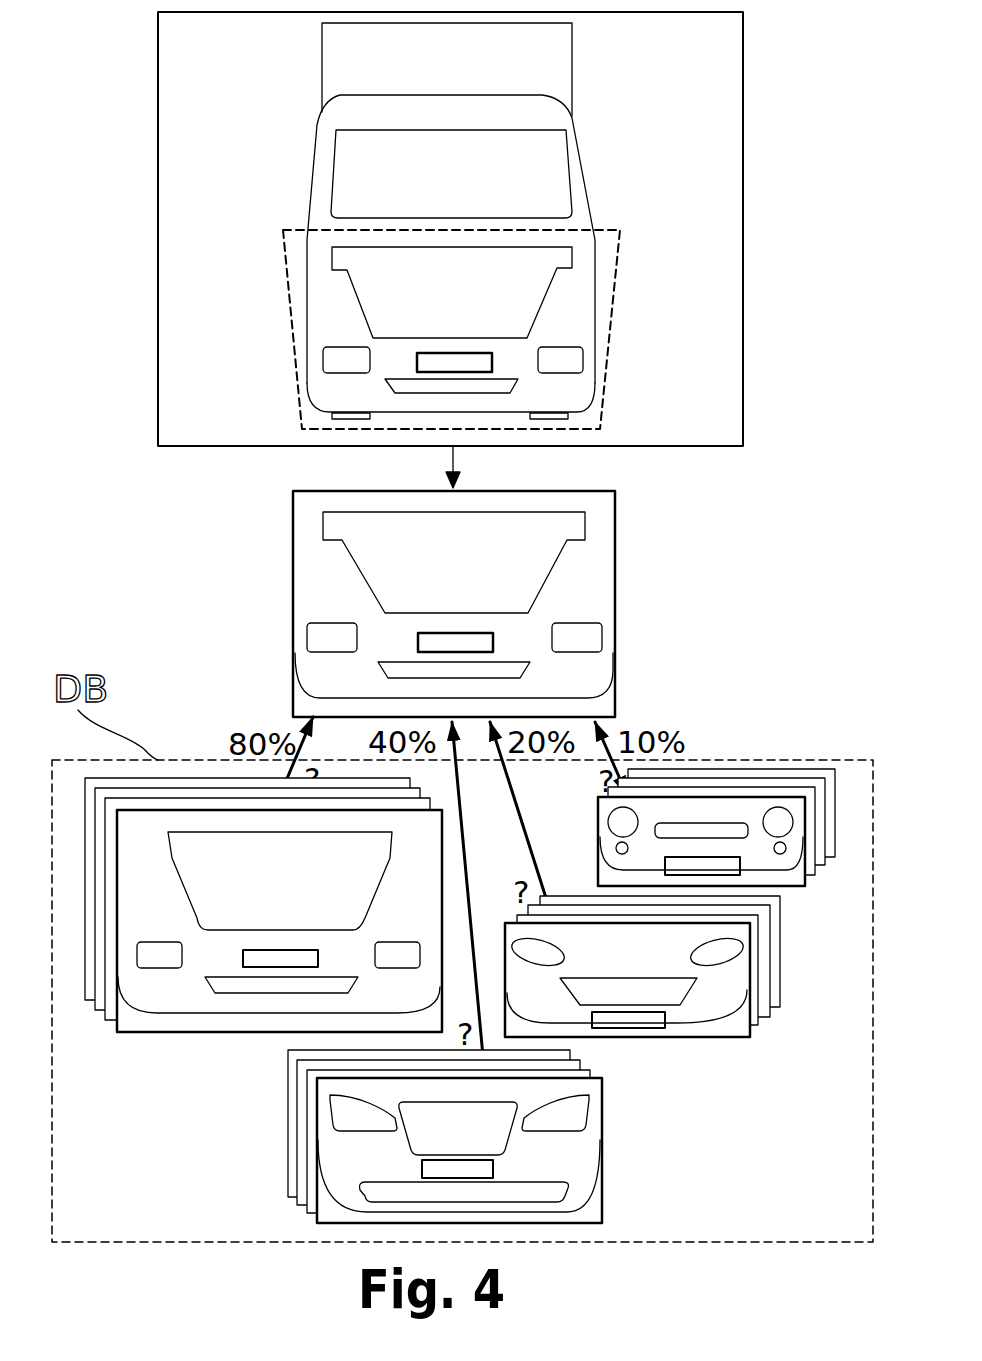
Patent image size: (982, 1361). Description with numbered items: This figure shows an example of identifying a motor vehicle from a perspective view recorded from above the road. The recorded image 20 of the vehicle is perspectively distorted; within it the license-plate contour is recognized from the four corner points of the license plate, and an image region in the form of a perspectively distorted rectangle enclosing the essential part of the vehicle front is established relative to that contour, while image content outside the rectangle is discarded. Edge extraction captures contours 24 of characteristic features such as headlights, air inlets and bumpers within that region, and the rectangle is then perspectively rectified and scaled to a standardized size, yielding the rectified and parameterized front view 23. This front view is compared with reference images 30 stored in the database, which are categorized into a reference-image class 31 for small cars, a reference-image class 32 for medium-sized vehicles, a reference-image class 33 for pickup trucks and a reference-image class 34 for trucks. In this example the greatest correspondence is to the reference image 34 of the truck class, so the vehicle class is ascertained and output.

The recorded image 20 is at (396, 259).
The rectified and parameterized front view 23 is at (461, 604).
The contours 24 is at (387, 677).
The reference images 30 is at (467, 1005).
The reference-image class for small cars 31 is at (850, 857).
The reference-image class for medium-sized vehicles 32 is at (792, 1007).
The reference-image class for pickup trucks 33 is at (313, 1235).
The reference-image class for trucks 34 is at (72, 1002).